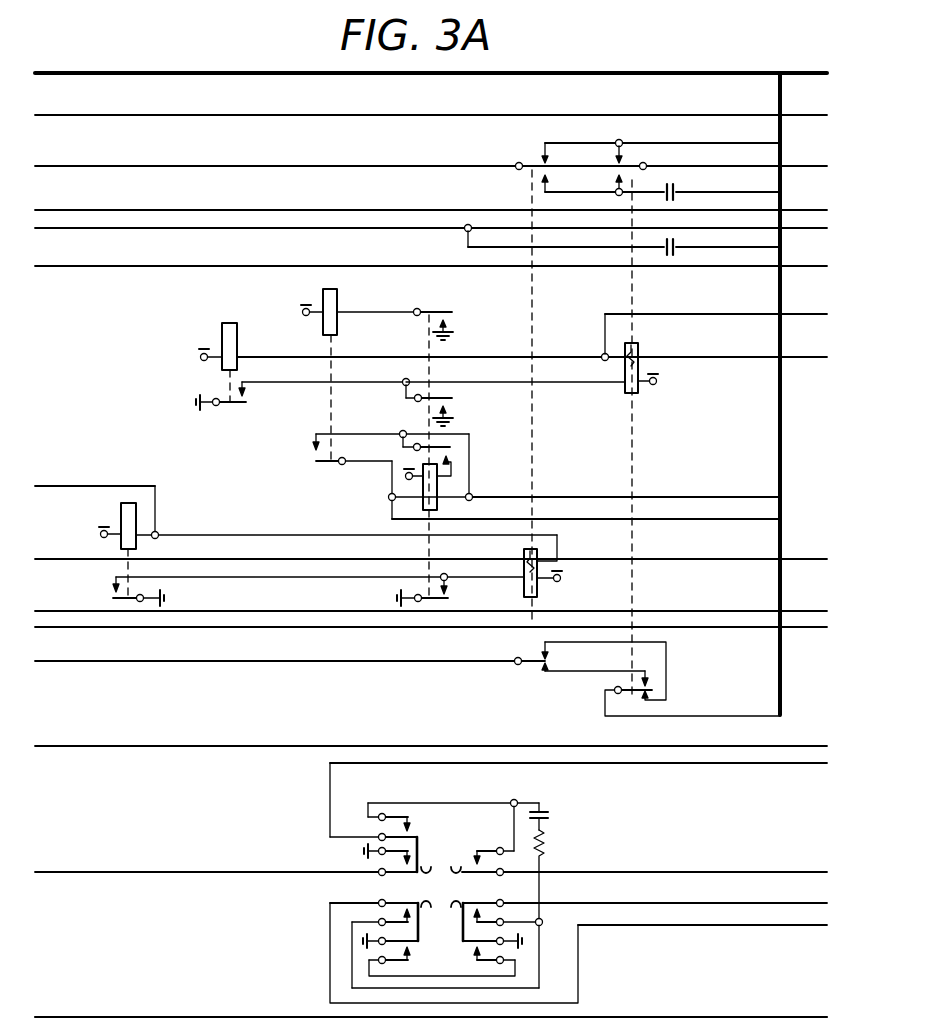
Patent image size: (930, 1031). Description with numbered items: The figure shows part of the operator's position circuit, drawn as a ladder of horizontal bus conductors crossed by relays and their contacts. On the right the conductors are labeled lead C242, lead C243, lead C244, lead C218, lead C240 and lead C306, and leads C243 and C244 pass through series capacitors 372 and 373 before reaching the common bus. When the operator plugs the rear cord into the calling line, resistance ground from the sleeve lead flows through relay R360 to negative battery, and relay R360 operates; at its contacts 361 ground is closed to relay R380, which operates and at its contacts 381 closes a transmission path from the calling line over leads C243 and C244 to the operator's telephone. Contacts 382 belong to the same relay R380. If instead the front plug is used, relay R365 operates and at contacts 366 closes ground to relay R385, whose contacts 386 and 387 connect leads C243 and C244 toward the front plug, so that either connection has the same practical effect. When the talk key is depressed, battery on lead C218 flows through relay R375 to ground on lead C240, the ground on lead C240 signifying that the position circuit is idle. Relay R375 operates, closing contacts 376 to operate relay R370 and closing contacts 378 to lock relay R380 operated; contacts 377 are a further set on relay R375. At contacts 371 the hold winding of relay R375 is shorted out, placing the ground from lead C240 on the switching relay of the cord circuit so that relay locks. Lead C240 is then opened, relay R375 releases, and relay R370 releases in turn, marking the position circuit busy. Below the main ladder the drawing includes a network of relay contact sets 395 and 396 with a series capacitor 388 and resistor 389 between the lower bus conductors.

The lead C242 is at (763, 148).
The lead C243 is at (763, 193).
The lead C244 is at (763, 248).
The lead C218 is at (763, 494).
The lead C240 is at (763, 519).
The lead C306 is at (763, 715).
The capacitor 372 is at (673, 203).
The capacitor 373 is at (673, 258).
The contacts of relay R380 381 is at (528, 176).
The contacts of relay R385 386 is at (618, 166).
The relay R365 is at (229, 322).
The relay R370 is at (341, 306).
The relay R375 is at (440, 513).
The relay R385 is at (640, 349).
The relay R360 is at (119, 506).
The relay R380 is at (538, 601).
The contacts of relay R365 366 is at (249, 404).
The contacts of relay R375 376 is at (447, 322).
The contacts of relay R375 377 is at (447, 409).
The contacts of relay R375 371 is at (312, 458).
The contacts of relay R360 361 is at (112, 598).
The contacts of relay R375 378 is at (448, 601).
The contacts of relay R380 382 is at (548, 663).
The contacts of relay R385 387 is at (653, 689).
The capacitor 388 is at (549, 820).
The resistor 389 is at (549, 848).
The relay contact set 395 is at (454, 883).
The relay contact set 396 is at (493, 885).